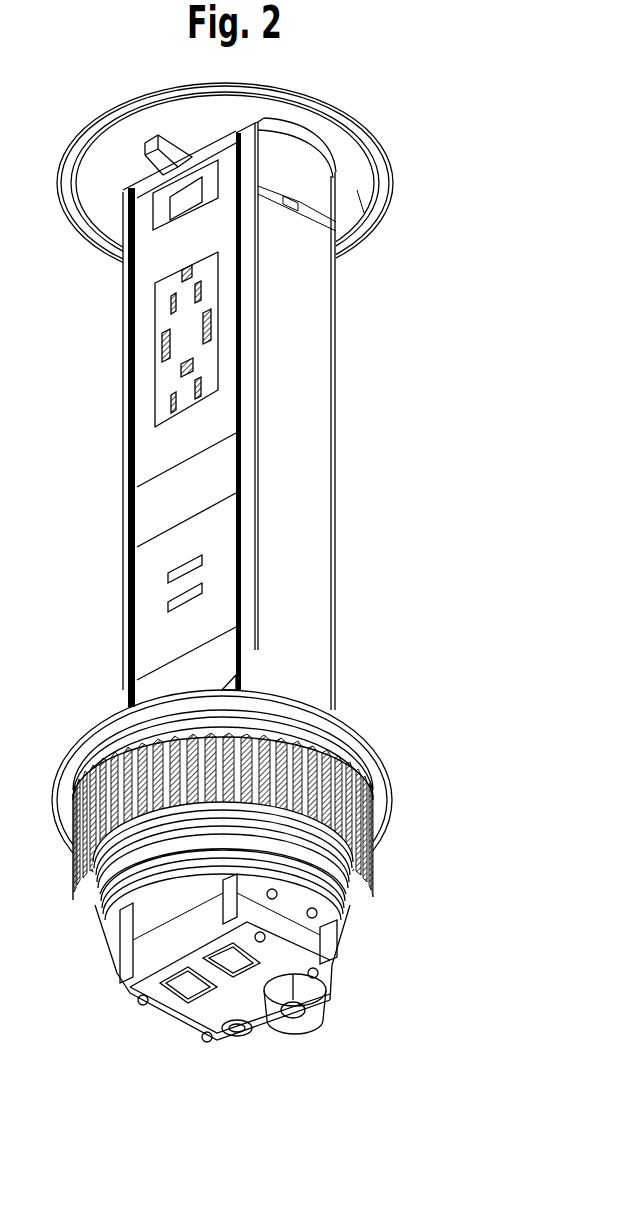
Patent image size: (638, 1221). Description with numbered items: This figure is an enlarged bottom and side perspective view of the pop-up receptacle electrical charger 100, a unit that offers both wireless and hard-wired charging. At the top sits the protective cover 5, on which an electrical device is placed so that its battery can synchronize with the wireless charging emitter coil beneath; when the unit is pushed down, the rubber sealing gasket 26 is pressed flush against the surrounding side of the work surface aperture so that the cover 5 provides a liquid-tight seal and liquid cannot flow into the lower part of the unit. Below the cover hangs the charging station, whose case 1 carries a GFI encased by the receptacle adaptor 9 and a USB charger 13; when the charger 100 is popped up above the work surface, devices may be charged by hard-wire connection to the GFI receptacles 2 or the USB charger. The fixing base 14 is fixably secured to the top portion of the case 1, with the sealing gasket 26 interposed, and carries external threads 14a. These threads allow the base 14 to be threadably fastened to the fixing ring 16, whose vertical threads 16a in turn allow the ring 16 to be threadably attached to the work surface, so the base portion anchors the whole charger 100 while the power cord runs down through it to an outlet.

The pop-up receptacle electrical charger 100 is at (413, 360).
The protective cover 5 is at (339, 99).
The rubber sealing gasket 26 is at (380, 223).
The GFI receptacles 2 is at (165, 313).
The receptacle adaptor 9 is at (160, 445).
The case 1 is at (338, 450).
The USB charger 13 is at (150, 592).
The fixing base 14 is at (351, 721).
The fixing ring 16 is at (386, 780).
The vertical threads 16a is at (363, 809).
The external threads 14a is at (363, 885).